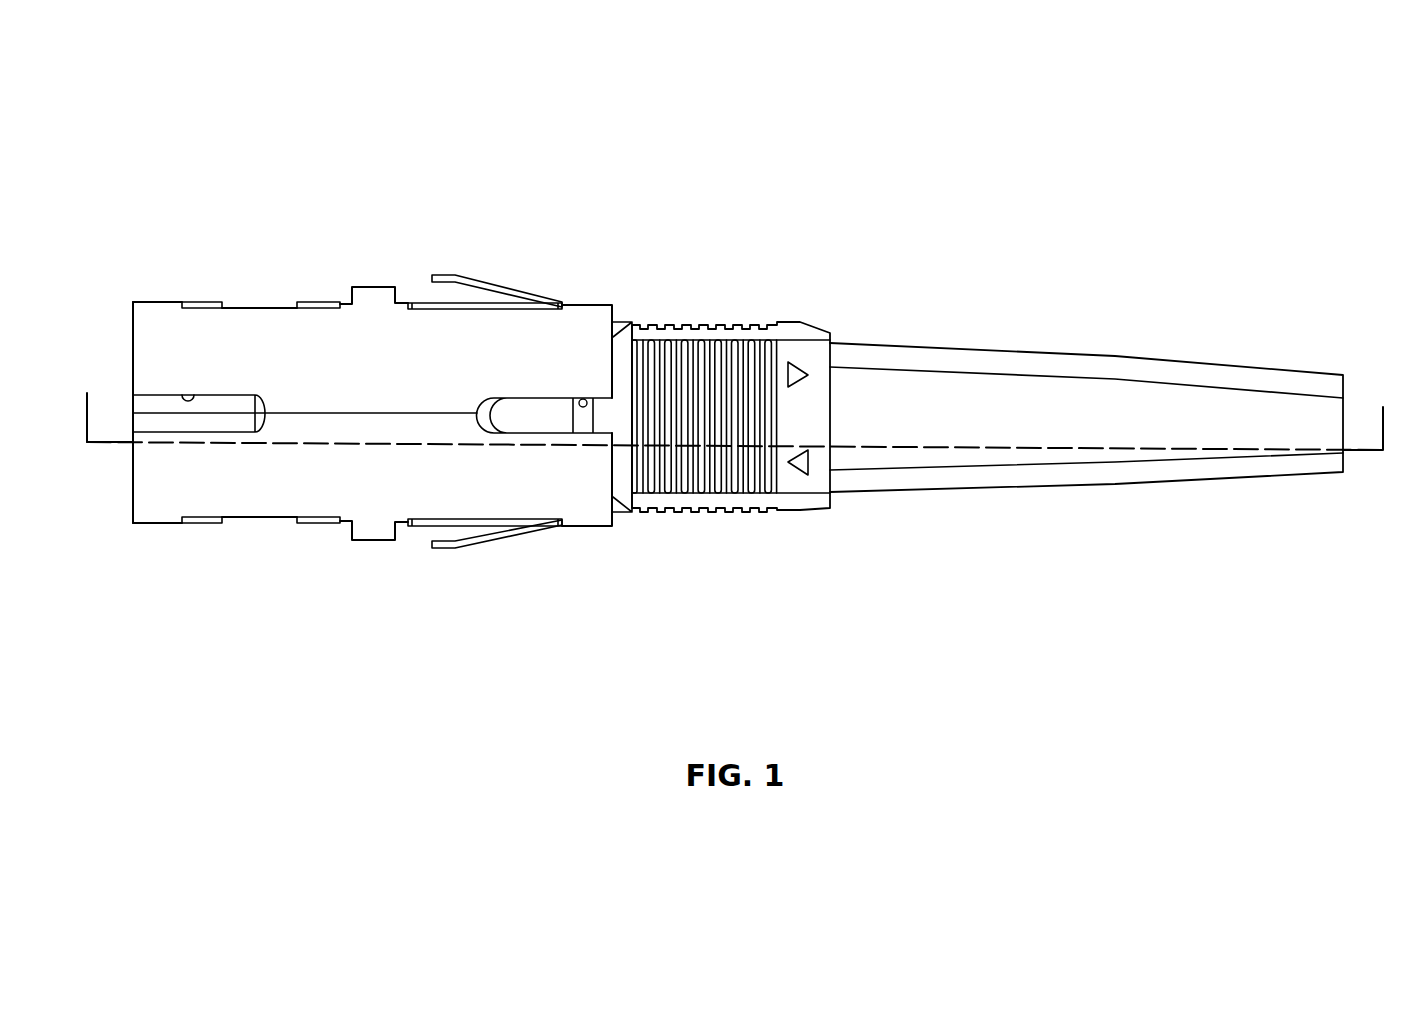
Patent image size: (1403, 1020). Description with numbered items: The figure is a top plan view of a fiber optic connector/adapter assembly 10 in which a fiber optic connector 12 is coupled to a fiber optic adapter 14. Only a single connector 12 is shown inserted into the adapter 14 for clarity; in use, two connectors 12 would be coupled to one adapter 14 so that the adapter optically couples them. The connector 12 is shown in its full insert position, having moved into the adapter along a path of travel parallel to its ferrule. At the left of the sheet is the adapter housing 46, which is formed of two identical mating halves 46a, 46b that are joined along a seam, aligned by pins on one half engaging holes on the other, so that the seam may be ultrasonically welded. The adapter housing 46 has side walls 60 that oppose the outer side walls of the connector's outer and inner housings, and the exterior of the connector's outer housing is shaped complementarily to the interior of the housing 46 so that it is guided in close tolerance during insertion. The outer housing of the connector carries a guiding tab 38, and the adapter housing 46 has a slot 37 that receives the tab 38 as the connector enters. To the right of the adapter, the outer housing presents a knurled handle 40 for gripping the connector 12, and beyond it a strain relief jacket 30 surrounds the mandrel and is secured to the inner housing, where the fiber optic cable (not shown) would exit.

The fiber optic connector/adapter assembly 10 is at (897, 270).
The fiber optic connector 12 is at (990, 349).
The fiber optic adapter 14 is at (212, 305).
The strain relief jacket 30 is at (1195, 362).
The slot 37 is at (192, 401).
The guiding tab 38 is at (525, 413).
The knurled handle 40 is at (712, 339).
The adapter housing 46 is at (160, 523).
The adapter housing mating half 46a is at (133, 498).
The adapter housing mating half 46b is at (133, 333).
The side walls 60 is at (158, 302).